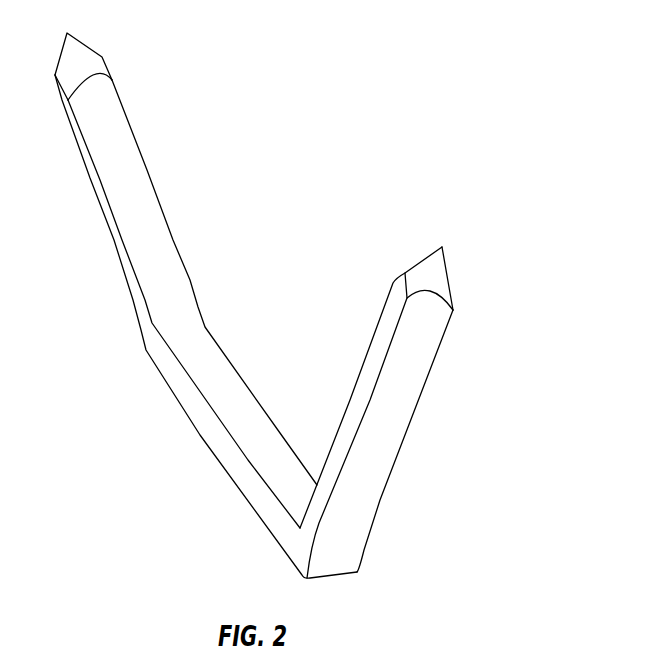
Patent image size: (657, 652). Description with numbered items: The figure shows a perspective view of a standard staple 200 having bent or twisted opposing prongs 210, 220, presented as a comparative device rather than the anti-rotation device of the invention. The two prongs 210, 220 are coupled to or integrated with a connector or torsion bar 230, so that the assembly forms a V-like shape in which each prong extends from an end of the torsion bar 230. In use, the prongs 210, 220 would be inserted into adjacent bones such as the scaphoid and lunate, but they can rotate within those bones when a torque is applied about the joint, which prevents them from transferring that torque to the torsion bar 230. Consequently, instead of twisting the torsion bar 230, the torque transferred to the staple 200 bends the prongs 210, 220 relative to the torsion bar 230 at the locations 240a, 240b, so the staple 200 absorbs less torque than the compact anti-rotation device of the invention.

The staple 200 is at (496, 77).
The prong 210 is at (402, 397).
The prong 220 is at (123, 212).
The torsion bar 230 is at (217, 452).
The bend location 240a is at (295, 548).
The bend location 240b is at (152, 348).